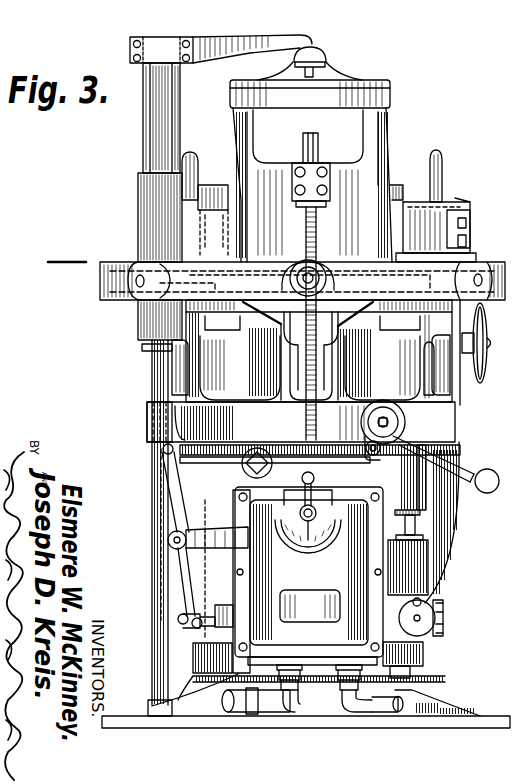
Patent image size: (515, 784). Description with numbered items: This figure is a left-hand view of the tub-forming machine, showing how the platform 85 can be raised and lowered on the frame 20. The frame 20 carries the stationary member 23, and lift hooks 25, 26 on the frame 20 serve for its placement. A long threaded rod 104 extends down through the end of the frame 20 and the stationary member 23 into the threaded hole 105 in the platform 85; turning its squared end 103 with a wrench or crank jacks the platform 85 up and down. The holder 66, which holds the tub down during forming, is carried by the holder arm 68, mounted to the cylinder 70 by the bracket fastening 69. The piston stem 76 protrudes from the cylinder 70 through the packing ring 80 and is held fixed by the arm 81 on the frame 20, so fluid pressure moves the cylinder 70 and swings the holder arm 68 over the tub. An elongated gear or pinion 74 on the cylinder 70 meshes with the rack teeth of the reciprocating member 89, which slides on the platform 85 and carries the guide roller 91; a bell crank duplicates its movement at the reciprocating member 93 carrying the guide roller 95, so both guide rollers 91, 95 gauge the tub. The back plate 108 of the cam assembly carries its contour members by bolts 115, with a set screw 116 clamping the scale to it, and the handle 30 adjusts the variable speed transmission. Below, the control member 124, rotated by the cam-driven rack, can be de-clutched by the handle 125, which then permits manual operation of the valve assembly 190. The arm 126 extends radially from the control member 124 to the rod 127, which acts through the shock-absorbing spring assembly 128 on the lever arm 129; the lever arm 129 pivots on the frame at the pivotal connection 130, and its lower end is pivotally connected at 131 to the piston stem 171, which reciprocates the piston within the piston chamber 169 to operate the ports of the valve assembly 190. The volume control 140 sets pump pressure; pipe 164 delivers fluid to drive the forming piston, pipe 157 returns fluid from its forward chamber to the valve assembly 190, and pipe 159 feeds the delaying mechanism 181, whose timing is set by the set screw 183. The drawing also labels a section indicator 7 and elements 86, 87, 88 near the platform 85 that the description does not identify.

The section line 7 is at (72, 246).
The frame 20 is at (258, 423).
The stationary member 23 is at (285, 145).
The lift hook 25 is at (188, 162).
The lift hook 26 is at (185, 368).
The handle 30 is at (486, 362).
The holder 66 is at (320, 54).
The holder arm 68 is at (226, 55).
The bracket fastening 69 is at (185, 64).
The cylinder 70 is at (145, 115).
The elongated gear or pinion 74 is at (140, 204).
The piston stem 76 is at (153, 368).
The packing ring 80 is at (141, 348).
The arm 81 is at (150, 425).
The platform 85 is at (118, 262).
The boss 86 is at (140, 300).
The bearing 87 is at (320, 275).
The boss 88 is at (475, 265).
The reciprocating member 89 is at (242, 318).
The guide roller 91 is at (222, 186).
The reciprocating member 93 is at (428, 352).
The guide roller 95 is at (440, 200).
The squared end 103 is at (318, 143).
The threaded rod 104 is at (320, 350).
The threaded hole 105 is at (322, 325).
The back plate 108 is at (465, 213).
The bolts 115 is at (470, 238).
The set screw 116 is at (470, 246).
The control member 124 is at (397, 418).
The handle 125 is at (470, 463).
The arm 126 is at (378, 454).
The rod 127 is at (303, 480).
The spring assembly 128 is at (204, 458).
The lever arm 129 is at (160, 485).
The pivotal connection 130 is at (165, 540).
The pivotal connection 131 is at (183, 623).
The volume control 140 is at (313, 478).
The pipe 157 is at (345, 700).
The pipe 159 is at (375, 688).
The pipe 164 is at (300, 695).
The piston chamber 169 is at (221, 581).
The piston stem 171 is at (208, 605).
The delaying mechanism 181 is at (432, 573).
The set screw 183 is at (415, 510).
The valve assembly 190 is at (334, 570).